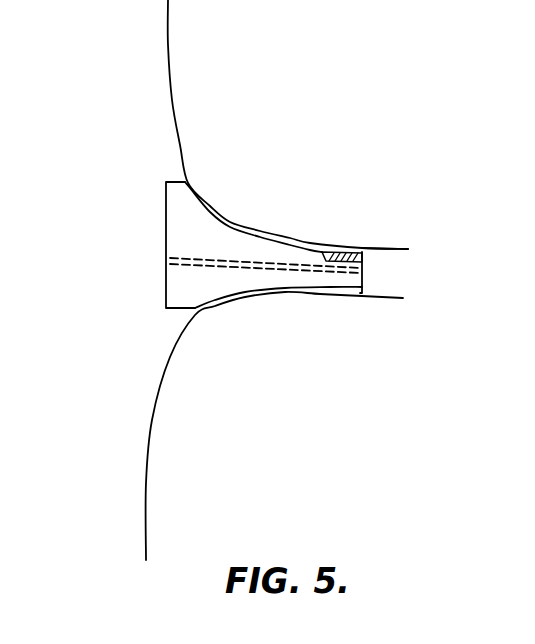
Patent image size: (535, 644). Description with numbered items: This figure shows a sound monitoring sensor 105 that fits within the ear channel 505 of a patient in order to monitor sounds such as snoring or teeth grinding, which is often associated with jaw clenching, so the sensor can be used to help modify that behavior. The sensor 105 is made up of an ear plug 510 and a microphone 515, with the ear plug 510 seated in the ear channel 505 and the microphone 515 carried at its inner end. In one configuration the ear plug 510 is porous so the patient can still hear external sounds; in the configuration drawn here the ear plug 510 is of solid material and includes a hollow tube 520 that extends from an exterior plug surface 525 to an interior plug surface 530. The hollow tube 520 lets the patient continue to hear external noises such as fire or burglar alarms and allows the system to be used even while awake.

The sensor 105 is at (117, 108).
The ear channel 505 is at (402, 249).
The ear plug 510 is at (210, 283).
The microphone 515 is at (350, 254).
The hollow tube 520 is at (278, 270).
The exterior plug surface 525 is at (165, 222).
The interior plug surface 530 is at (362, 290).